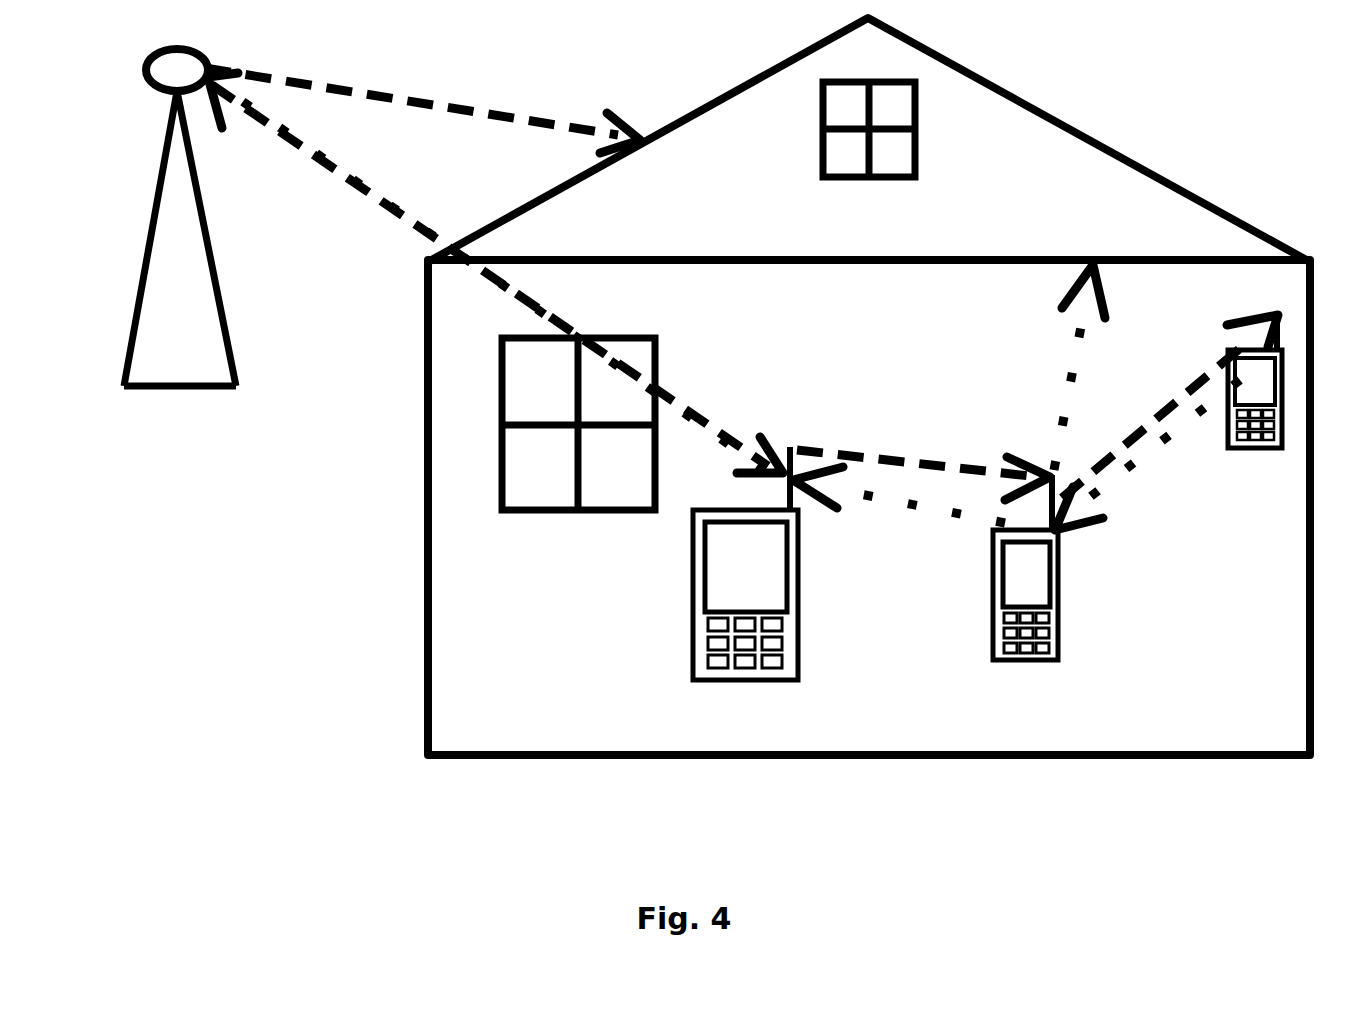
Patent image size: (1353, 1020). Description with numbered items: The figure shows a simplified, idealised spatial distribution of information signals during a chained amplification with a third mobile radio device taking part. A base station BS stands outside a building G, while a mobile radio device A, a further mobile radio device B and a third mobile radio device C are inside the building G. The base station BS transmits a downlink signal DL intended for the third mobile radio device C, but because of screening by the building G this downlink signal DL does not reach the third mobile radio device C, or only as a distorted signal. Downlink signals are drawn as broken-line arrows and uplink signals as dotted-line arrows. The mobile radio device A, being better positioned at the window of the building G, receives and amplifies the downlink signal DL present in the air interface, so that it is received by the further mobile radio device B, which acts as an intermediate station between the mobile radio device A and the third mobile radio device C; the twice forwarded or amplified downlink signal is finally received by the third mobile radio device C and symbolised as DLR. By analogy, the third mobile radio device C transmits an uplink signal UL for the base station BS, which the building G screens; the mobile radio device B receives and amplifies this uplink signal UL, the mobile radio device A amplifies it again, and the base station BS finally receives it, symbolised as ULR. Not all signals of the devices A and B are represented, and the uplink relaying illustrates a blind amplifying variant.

The base station BS is at (180, 241).
The building G is at (869, 407).
The mobile radio device A is at (745, 563).
The further mobile radio device B is at (1025, 567).
The third mobile radio device C is at (1255, 380).
The downlink signal DL is at (627, 284).
The uplink signal UL is at (1016, 402).
The received uplink signal ULR is at (486, 271).
The received downlink signal DLR is at (1170, 406).